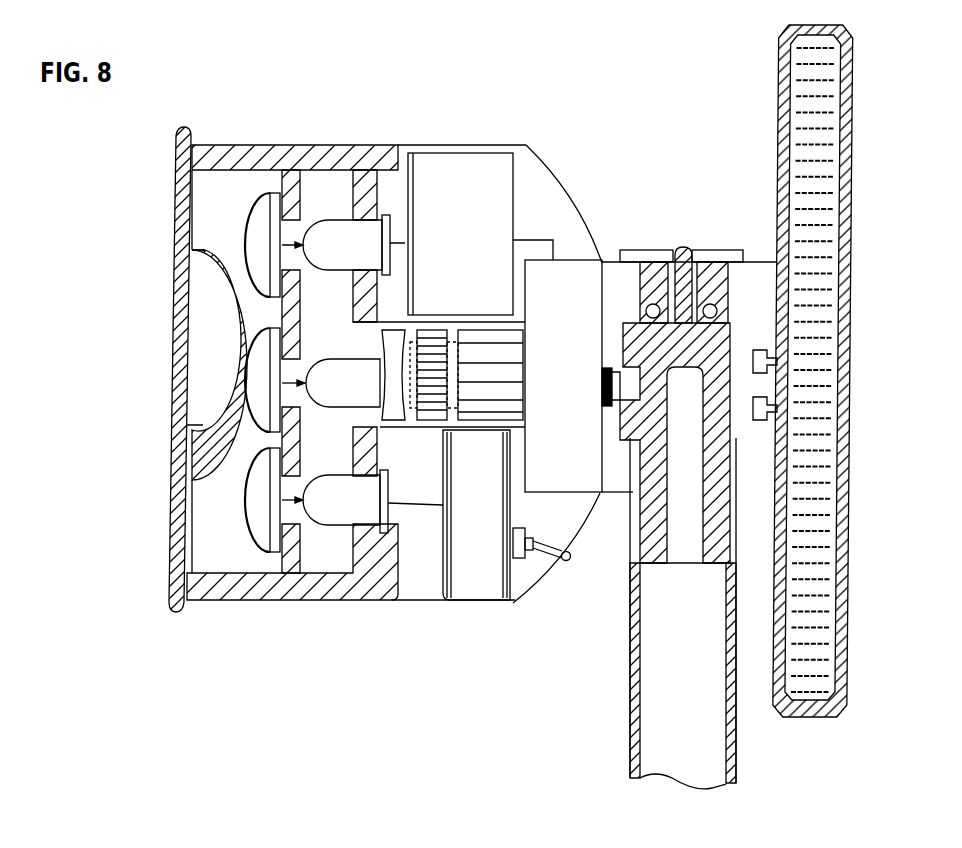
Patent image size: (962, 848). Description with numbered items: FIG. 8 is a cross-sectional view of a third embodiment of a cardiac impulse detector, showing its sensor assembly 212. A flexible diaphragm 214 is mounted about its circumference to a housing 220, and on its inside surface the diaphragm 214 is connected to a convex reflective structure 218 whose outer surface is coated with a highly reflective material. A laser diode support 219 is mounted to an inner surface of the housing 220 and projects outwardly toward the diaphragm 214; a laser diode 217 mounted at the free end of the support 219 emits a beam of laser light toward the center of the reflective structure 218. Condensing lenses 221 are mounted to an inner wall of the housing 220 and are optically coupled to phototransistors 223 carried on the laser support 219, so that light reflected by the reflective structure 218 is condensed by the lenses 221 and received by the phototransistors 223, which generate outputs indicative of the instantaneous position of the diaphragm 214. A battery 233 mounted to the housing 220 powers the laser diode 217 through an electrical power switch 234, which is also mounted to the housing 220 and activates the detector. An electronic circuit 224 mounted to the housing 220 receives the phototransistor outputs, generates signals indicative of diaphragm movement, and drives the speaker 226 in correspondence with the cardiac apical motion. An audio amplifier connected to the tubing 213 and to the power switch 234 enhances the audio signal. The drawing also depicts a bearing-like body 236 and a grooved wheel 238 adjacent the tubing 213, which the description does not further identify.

The sensor assembly 212 is at (562, 130).
The tubing 213 is at (741, 748).
The flexible diaphragm 214 is at (172, 221).
The laser diode 217 is at (477, 355).
The convex reflective structure 218 is at (205, 478).
The laser diode support 219 is at (421, 512).
The housing 220 is at (220, 144).
The condensing lenses 221 is at (258, 232).
The phototransistors 223 is at (317, 355).
The electronic circuit 224 is at (487, 187).
The speaker 226 is at (558, 302).
The battery 233 is at (455, 576).
The electrical power switch 234 is at (570, 566).
The bearing housing 236 is at (748, 326).
The wheel 238 is at (820, 238).